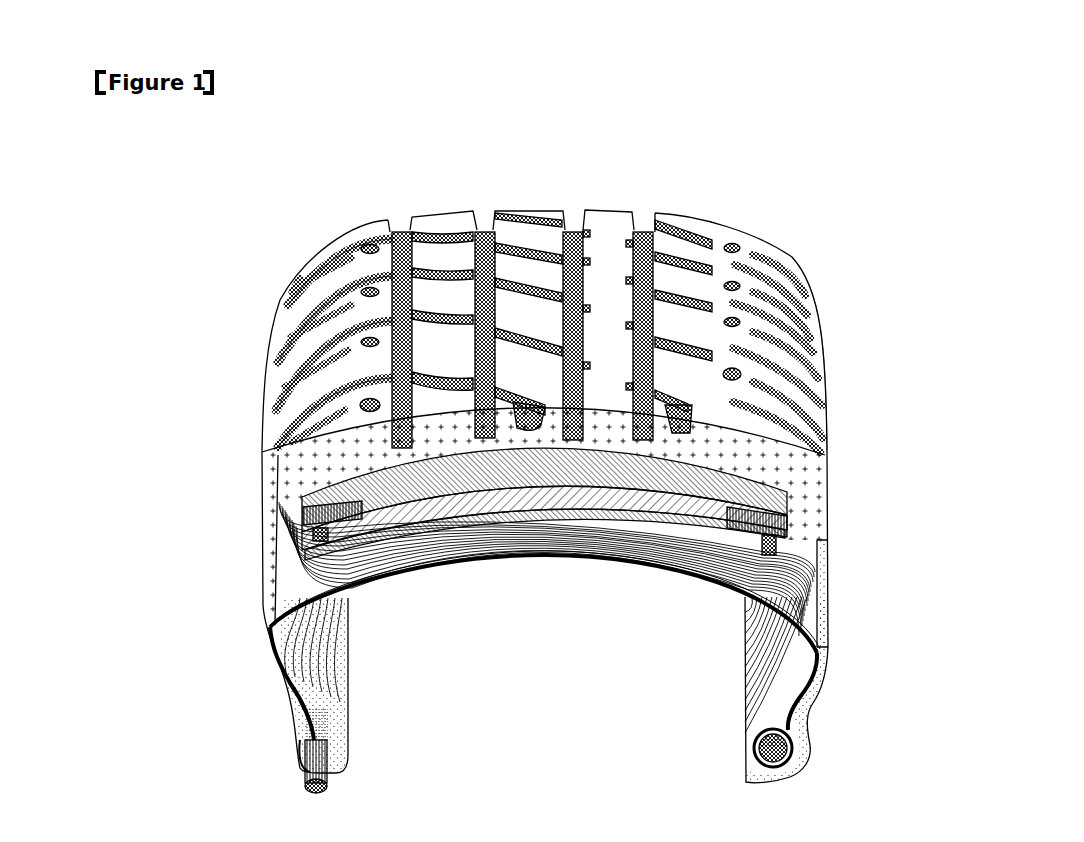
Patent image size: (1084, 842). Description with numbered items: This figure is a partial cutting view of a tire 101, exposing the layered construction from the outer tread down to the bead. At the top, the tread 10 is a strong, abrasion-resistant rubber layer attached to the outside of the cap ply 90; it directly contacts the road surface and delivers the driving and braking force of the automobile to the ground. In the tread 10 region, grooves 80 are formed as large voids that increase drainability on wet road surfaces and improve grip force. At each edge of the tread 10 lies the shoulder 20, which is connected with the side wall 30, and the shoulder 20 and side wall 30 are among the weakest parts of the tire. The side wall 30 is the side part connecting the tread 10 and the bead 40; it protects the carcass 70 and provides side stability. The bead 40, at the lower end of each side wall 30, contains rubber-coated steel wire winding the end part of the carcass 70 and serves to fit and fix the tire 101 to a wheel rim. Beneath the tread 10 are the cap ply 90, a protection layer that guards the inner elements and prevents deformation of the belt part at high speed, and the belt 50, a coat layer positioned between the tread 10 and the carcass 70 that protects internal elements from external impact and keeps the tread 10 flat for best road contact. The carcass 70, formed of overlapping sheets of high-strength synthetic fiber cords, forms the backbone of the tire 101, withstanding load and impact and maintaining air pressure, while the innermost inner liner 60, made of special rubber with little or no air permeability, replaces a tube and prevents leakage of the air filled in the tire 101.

The tire 101 is at (309, 186).
The tread 10 is at (447, 257).
The shoulder 20 is at (778, 298).
The side wall 30 is at (828, 600).
The bead 40 is at (312, 772).
The belt 50 is at (596, 517).
The inner liner 60 is at (338, 623).
The carcass 70 is at (298, 572).
The groove 80 is at (485, 455).
The cap ply 90 is at (673, 473).